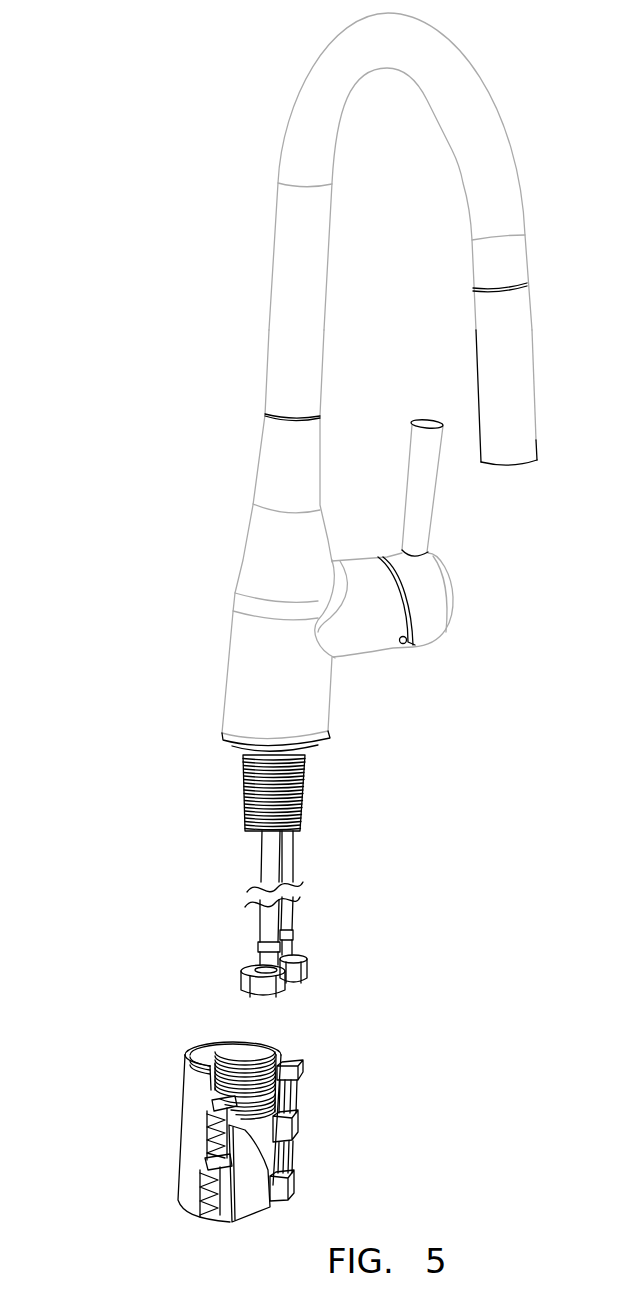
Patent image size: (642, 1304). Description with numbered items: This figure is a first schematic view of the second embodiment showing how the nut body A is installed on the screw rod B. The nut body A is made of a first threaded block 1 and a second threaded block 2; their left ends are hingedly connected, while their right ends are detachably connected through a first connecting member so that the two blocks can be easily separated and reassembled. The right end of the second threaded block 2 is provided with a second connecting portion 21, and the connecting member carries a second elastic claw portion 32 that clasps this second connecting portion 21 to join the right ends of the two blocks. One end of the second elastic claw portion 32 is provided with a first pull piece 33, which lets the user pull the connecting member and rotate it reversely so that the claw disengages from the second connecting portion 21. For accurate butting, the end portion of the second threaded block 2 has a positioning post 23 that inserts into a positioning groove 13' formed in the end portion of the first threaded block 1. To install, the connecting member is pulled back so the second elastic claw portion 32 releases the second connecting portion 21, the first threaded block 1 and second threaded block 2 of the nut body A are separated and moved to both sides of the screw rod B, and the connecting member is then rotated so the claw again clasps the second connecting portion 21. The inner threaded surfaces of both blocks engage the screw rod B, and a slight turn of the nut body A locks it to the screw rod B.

The first threaded block 1 is at (190, 1133).
The second threaded block 2 is at (268, 1043).
The second connecting portion 21 is at (292, 1102).
The positioning post 23 is at (293, 1128).
The first pull piece 33 is at (263, 1175).
The second elastic claw portion 32 is at (207, 1148).
The positioning groove 13' is at (176, 1204).
The nut body A is at (136, 1012).
The screw rod B is at (317, 758).